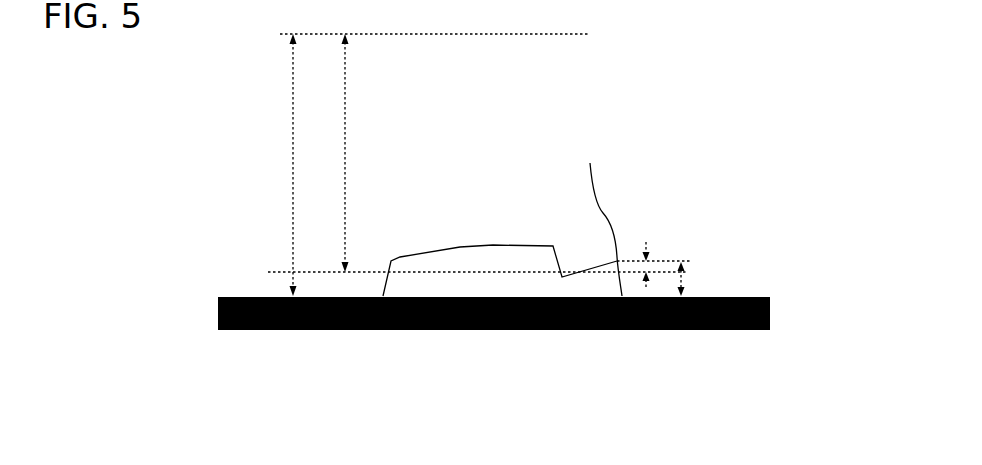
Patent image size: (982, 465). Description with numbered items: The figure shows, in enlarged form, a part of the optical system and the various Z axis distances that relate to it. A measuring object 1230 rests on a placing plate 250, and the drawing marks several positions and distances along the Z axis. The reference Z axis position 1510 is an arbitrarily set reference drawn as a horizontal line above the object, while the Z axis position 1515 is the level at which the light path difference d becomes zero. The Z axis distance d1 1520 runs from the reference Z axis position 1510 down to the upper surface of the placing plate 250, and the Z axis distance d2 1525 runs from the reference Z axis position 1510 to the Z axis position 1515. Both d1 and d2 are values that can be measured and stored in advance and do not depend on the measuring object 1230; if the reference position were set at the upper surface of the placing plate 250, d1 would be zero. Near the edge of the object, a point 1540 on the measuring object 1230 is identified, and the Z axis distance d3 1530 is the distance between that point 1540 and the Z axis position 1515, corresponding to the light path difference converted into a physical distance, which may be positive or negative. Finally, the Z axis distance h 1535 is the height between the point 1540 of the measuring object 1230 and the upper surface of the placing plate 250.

The placing plate 250 is at (490, 330).
The measuring object 1230 is at (500, 244).
The reference Z axis position 1510 is at (467, 38).
The Z axis position where light path difference is zero 1515 is at (268, 272).
The Z axis distance d1 1520 is at (293, 151).
The Z axis distance d2 1525 is at (346, 153).
The Z axis distance d3 1530 is at (646, 242).
The Z axis distance h 1535 is at (683, 280).
The point of the measuring object 1540 is at (591, 216).